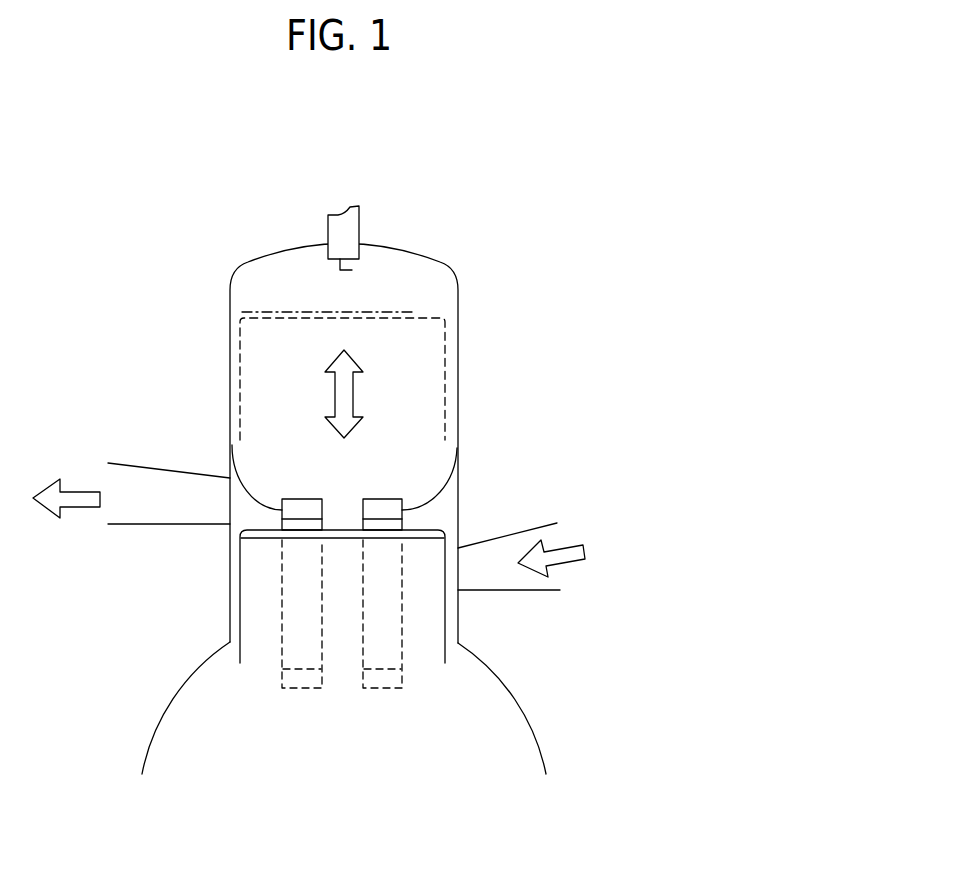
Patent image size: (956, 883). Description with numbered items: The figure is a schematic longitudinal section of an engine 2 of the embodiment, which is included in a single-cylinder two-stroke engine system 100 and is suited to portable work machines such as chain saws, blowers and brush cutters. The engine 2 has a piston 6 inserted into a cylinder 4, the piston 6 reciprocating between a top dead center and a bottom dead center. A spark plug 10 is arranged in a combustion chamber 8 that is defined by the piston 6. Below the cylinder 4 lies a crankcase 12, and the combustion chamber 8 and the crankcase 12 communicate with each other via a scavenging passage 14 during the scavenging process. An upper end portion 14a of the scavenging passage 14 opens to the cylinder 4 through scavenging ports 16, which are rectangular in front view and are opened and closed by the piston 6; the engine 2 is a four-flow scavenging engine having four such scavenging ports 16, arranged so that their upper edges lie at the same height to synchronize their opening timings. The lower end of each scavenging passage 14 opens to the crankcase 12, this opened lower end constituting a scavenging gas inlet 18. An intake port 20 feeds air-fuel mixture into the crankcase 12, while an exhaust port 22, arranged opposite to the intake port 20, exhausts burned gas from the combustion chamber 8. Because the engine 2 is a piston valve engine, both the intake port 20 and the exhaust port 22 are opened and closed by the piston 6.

The engine 2 is at (170, 175).
The single-cylinder two-stroke engine system 100 is at (320, 487).
The cylinder 4 is at (231, 300).
The piston 6 is at (422, 316).
The combustion chamber 8 is at (386, 293).
The spark plug 10 is at (345, 233).
The crankcase 12 is at (482, 735).
The scavenging passage 14 is at (365, 638).
The upper end portion of the scavenging passage 14a is at (232, 445).
The scavenging ports 16 is at (303, 508).
The scavenging gas inlet 18 is at (305, 690).
The intake port 20 is at (458, 567).
The exhaust port 22 is at (230, 492).